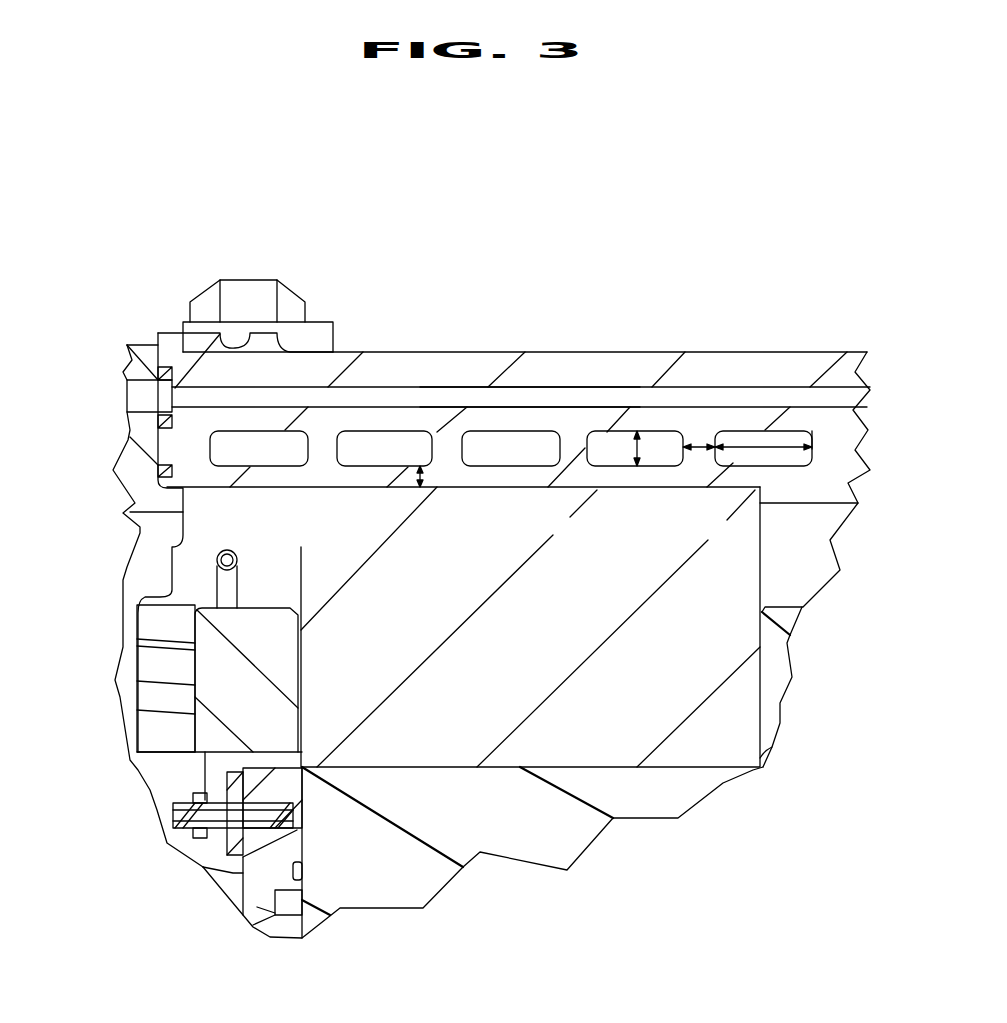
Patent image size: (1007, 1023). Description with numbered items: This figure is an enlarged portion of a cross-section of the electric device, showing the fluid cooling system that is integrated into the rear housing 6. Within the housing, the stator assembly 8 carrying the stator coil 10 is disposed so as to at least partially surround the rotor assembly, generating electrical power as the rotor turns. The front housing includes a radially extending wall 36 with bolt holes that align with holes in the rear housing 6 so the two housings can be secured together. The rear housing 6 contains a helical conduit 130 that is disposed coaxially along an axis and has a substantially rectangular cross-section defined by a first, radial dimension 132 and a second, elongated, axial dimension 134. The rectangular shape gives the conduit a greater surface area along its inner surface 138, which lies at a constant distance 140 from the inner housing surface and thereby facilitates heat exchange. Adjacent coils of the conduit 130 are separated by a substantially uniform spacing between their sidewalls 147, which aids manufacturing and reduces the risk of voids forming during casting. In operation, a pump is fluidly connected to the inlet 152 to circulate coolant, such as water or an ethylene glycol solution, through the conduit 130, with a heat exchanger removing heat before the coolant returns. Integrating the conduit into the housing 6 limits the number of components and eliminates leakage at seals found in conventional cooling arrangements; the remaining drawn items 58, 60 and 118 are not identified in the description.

The rear housing 6 is at (390, 362).
The stator assembly 8 is at (664, 726).
The stator coil 10 is at (97, 722).
The radially extending wall 36 is at (140, 433).
The lower housing portion 58 is at (277, 920).
The fastener 60 is at (177, 813).
The intermediate layer 118 is at (557, 395).
The helical conduit 130 is at (813, 437).
The radial dimension 132 is at (688, 445).
The axial dimension 134 is at (757, 446).
The inner surface 138 is at (267, 466).
The constant distance 140 is at (310, 487).
The sidewalls 147 is at (637, 450).
The inlet 152 is at (247, 292).